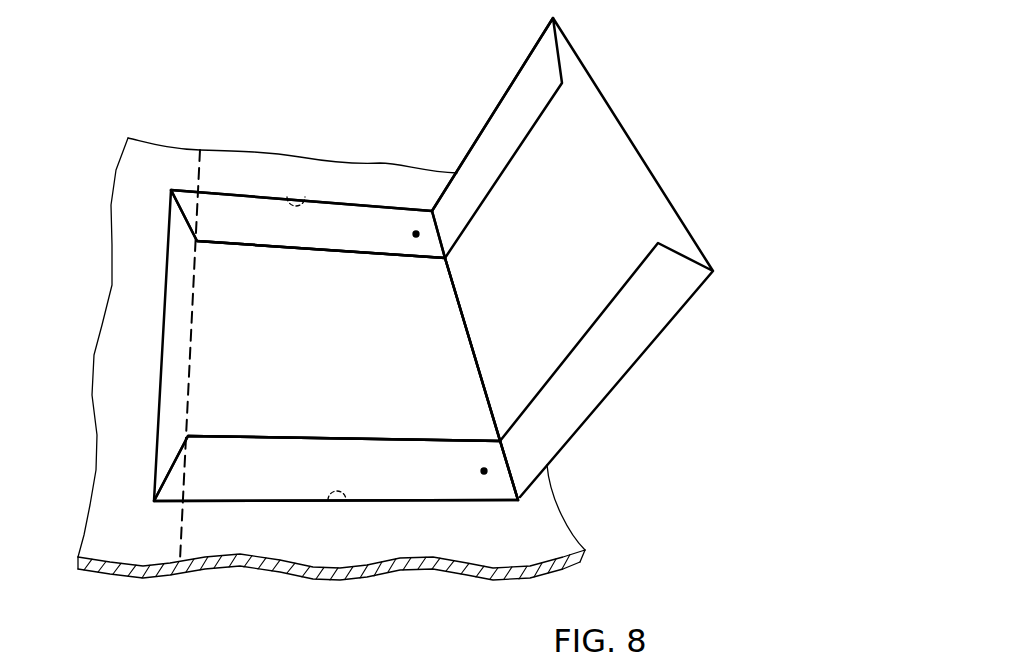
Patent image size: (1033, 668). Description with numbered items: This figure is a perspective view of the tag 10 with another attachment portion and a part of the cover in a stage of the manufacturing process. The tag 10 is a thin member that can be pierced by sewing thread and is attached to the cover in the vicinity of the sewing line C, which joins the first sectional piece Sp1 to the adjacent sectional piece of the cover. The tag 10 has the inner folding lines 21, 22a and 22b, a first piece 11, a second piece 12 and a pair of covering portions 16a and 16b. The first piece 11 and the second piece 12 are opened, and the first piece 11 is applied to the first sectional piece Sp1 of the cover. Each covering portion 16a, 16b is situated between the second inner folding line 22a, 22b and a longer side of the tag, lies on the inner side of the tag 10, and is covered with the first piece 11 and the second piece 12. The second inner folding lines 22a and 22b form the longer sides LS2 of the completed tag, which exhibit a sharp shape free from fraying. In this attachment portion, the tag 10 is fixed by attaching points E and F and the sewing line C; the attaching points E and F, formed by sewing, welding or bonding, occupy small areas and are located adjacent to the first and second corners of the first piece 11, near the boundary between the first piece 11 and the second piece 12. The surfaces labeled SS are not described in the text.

The tag 10 is at (448, 135).
The first piece 11 is at (316, 357).
The second piece 12 is at (556, 259).
The covering portion 16a is at (232, 210).
The covering portion 16b is at (243, 483).
The inner folding line 21 is at (492, 378).
The second inner folding line 22a is at (305, 197).
The second inner folding line 22b is at (345, 500).
The sewing line C is at (209, 297).
The attaching point E is at (416, 240).
The attaching point F is at (484, 466).
The longer side LS2 is at (357, 205).
The side surface SS is at (160, 350).
The first sectional piece Sp1 is at (517, 540).